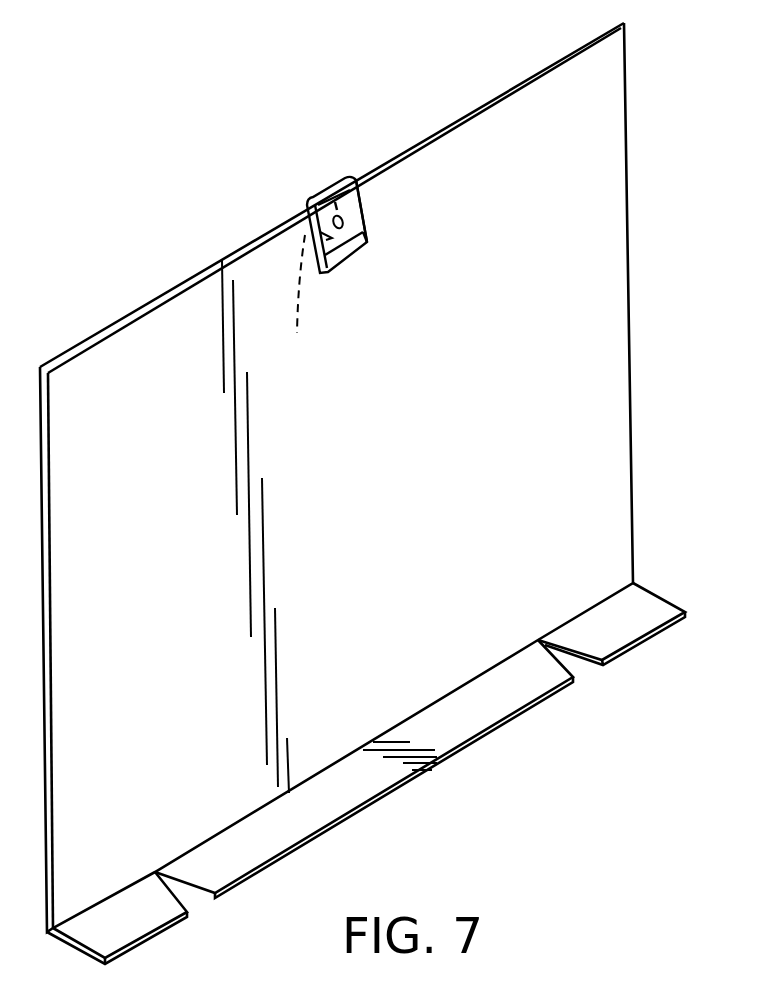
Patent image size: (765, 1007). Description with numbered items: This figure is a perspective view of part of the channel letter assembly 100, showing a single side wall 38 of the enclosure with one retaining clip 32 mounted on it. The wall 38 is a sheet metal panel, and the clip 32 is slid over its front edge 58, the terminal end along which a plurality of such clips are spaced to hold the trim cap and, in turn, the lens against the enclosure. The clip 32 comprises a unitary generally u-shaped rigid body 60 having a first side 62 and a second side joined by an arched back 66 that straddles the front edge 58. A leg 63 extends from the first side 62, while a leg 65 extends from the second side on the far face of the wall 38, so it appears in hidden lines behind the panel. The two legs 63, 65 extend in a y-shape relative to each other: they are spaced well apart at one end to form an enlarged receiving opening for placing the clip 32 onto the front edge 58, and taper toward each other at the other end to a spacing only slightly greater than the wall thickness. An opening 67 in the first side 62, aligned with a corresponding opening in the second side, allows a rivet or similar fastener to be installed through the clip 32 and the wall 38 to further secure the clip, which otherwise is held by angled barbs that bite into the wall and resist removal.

The channel letter assembly 100 is at (377, 493).
The retaining clip 32 is at (323, 222).
The wall 38 is at (610, 330).
The front edge 58 is at (447, 123).
The u-shaped rigid body 60 is at (337, 273).
The first side 62 is at (357, 195).
The leg 63 is at (365, 247).
The leg 65 is at (284, 302).
The arched back 66 is at (343, 177).
The opening 67 is at (305, 227).